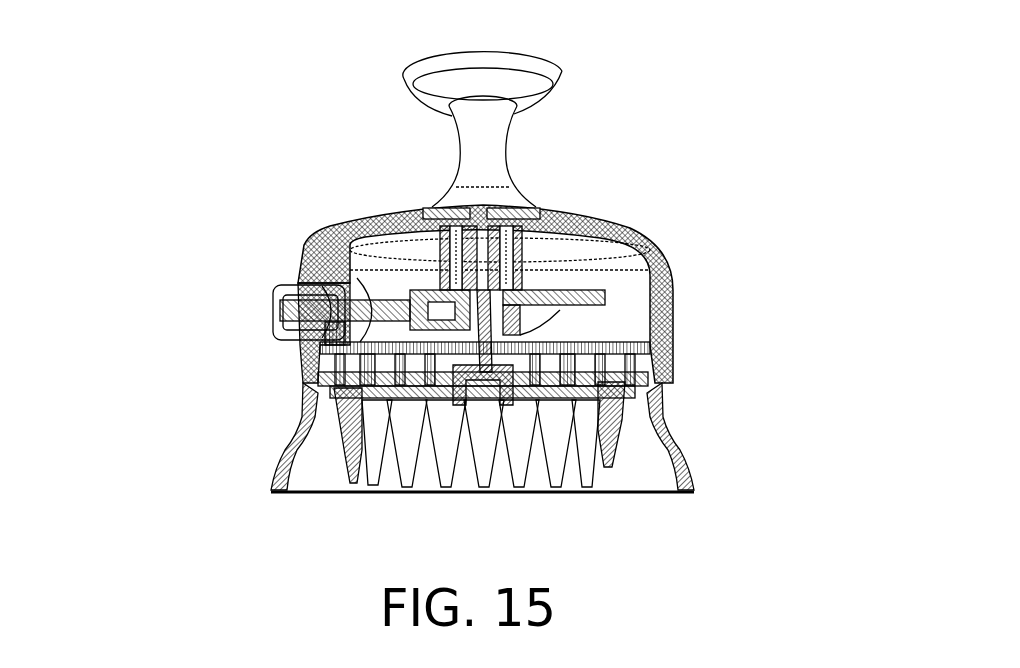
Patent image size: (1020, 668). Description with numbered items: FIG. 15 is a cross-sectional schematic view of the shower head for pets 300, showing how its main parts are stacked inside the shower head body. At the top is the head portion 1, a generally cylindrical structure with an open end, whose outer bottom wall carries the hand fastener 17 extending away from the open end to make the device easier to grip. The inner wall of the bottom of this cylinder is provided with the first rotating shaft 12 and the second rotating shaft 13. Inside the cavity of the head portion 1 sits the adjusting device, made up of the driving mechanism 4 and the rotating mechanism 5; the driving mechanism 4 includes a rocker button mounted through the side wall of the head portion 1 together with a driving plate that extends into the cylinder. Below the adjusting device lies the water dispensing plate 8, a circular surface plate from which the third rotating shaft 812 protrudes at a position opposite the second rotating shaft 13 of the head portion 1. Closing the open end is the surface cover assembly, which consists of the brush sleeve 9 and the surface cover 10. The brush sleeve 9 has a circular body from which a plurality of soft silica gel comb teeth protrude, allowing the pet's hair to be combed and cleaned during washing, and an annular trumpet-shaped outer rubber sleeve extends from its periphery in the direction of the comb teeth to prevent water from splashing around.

The shower head for pets 300 is at (758, 97).
The head portion 1 is at (322, 222).
The hand fastener 17 is at (473, 117).
The first rotating shaft 12 is at (540, 207).
The rotating mechanism 5 is at (592, 292).
The third rotating shaft 812 is at (300, 273).
The driving mechanism 4 is at (278, 313).
The water dispensing plate 8 is at (677, 328).
The second rotating shaft 13 is at (300, 372).
The brush sleeve 9 is at (678, 460).
The surface cover 10 is at (578, 410).